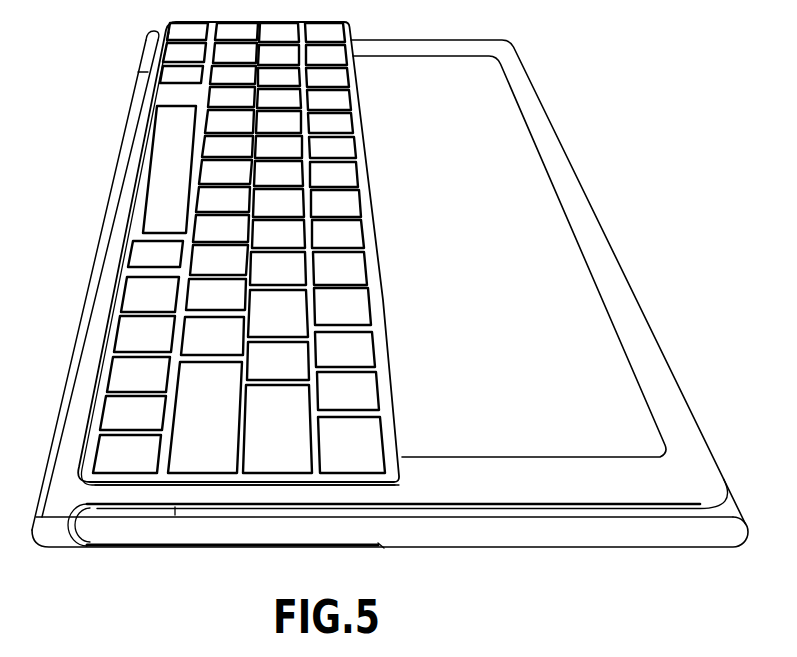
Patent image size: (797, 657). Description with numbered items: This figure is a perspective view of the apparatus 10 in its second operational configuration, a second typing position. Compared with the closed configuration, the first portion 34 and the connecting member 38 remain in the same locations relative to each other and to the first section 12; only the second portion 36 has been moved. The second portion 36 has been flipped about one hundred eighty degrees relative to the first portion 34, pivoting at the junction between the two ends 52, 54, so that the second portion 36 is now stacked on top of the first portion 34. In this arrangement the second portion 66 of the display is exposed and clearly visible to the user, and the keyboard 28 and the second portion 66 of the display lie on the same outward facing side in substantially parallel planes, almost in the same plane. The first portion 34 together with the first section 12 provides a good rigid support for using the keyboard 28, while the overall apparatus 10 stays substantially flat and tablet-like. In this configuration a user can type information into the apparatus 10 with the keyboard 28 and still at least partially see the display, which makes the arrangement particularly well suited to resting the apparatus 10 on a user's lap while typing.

The apparatus 10 is at (612, 106).
The first section 12 is at (600, 538).
The keyboard 28 is at (155, 168).
The first portion 34 is at (195, 512).
The second portion 36 is at (160, 470).
The connecting member 38 is at (240, 550).
The end 52 is at (407, 507).
The end 54 is at (455, 495).
The second portion of the display 66 is at (587, 300).